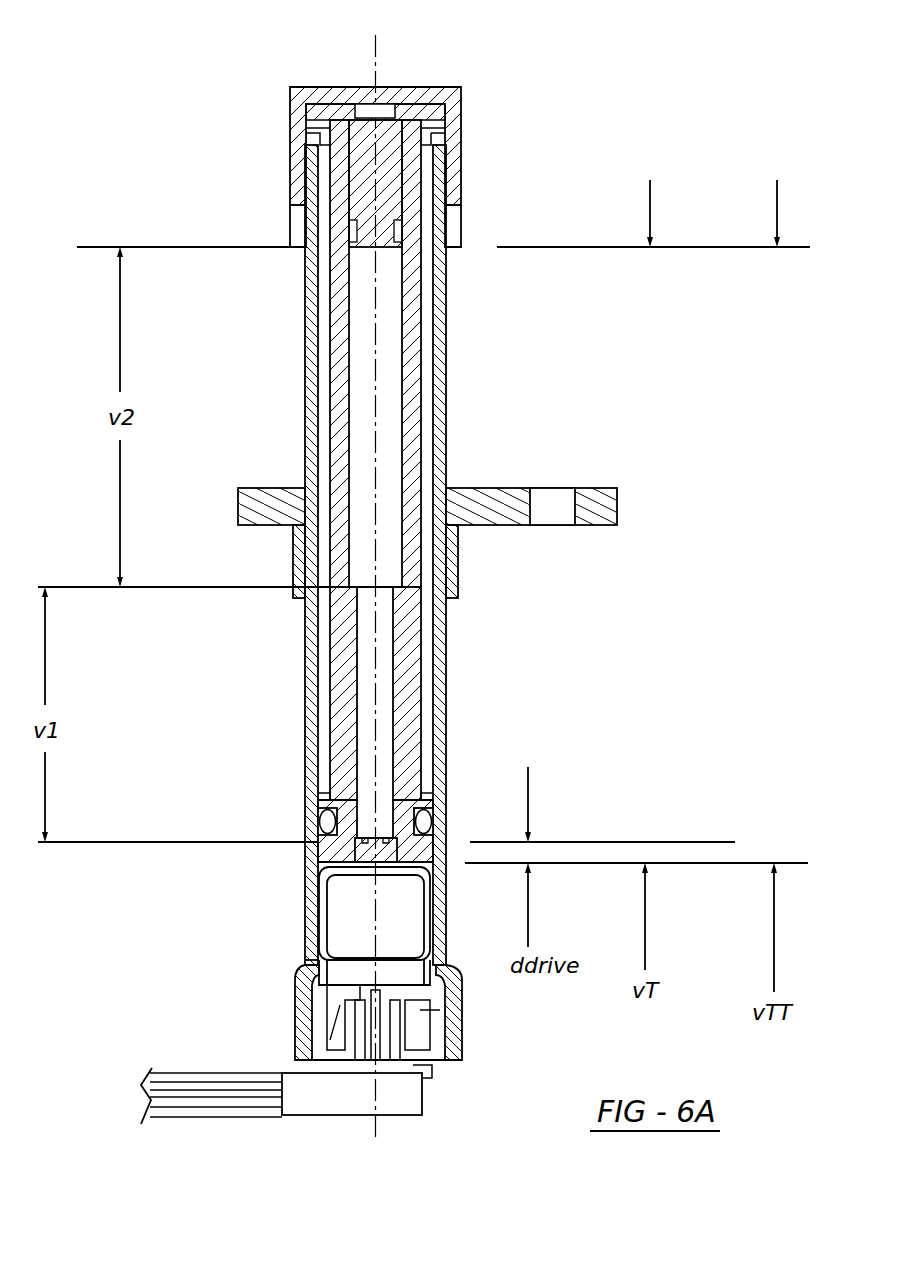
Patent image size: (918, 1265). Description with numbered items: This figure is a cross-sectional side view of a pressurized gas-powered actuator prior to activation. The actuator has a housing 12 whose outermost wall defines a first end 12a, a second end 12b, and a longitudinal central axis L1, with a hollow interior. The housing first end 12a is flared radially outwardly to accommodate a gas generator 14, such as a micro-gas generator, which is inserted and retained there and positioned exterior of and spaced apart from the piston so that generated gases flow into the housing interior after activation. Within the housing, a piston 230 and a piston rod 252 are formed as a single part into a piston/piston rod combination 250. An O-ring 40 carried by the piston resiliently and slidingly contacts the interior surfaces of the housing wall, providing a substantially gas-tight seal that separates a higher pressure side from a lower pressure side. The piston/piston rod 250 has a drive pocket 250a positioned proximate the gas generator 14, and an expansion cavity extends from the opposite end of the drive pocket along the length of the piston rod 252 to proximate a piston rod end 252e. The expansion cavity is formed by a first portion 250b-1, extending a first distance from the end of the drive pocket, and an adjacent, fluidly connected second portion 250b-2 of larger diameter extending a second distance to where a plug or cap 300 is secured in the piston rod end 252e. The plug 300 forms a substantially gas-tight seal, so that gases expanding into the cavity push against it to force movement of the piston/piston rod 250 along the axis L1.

The longitudinal central axis L1 is at (376, 48).
The piston rod end 252e is at (327, 153).
The plug or cap 300 is at (388, 165).
The piston rod 252 is at (410, 280).
The second end 12b is at (312, 175).
The housing 12 is at (312, 418).
The expansion cavity second portion 250b-2 is at (388, 369).
The piston/piston rod combination 250 is at (405, 648).
The expansion cavity first portion 250b-1 is at (388, 712).
The piston 230 is at (322, 800).
The O-ring 40 is at (425, 827).
The drive pocket 250a is at (360, 855).
The first end 12a is at (305, 1020).
The gas generator 14 is at (398, 945).